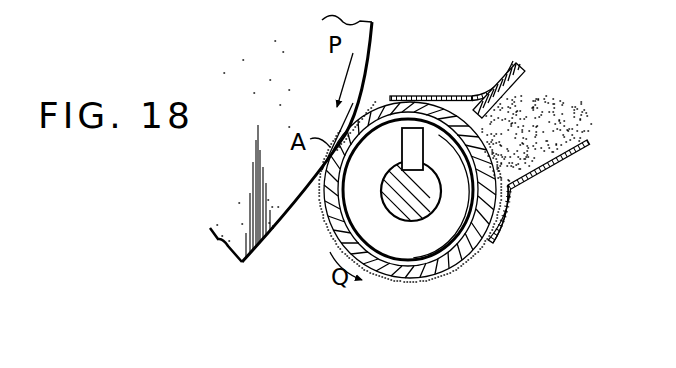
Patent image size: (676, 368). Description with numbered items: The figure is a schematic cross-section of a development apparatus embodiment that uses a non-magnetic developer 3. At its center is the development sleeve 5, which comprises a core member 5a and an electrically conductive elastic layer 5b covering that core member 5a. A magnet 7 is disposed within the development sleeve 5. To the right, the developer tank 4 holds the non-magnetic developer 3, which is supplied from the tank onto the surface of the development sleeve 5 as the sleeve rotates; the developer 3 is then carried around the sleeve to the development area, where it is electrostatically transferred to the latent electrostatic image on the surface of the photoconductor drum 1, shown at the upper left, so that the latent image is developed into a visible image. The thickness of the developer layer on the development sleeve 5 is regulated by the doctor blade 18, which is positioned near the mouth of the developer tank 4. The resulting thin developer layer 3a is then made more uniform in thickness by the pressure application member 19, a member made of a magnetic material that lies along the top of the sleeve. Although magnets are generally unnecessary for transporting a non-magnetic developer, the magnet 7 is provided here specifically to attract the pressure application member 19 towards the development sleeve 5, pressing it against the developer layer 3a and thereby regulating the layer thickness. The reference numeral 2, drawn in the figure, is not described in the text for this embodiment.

The photoconductor drum 1 is at (374, 32).
The developing device hopper 2 is at (521, 127).
The developer 3 is at (556, 159).
The developer layer 3a is at (462, 96).
The developer tank 4 is at (524, 181).
The development sleeve 5 is at (390, 215).
The core member 5a is at (334, 232).
The electrically conductive elastic layer 5b is at (452, 263).
The magnet 7 is at (402, 152).
The doctor blade 18 is at (528, 73).
The pressure application member 19 is at (435, 97).